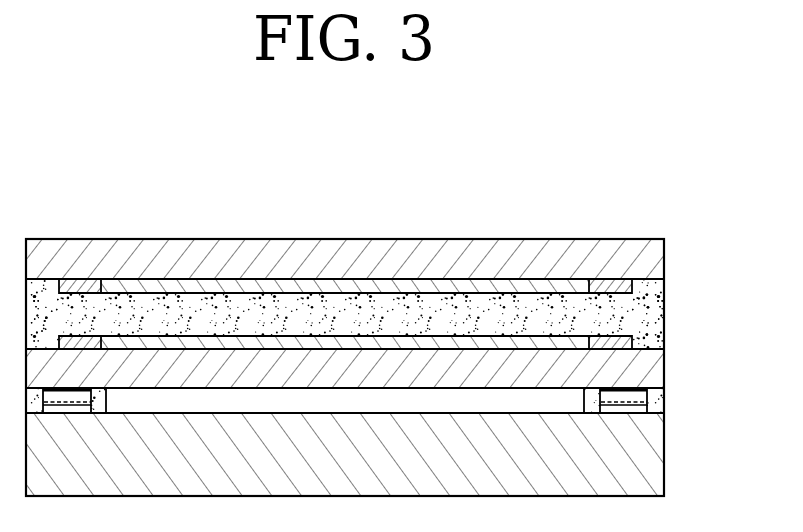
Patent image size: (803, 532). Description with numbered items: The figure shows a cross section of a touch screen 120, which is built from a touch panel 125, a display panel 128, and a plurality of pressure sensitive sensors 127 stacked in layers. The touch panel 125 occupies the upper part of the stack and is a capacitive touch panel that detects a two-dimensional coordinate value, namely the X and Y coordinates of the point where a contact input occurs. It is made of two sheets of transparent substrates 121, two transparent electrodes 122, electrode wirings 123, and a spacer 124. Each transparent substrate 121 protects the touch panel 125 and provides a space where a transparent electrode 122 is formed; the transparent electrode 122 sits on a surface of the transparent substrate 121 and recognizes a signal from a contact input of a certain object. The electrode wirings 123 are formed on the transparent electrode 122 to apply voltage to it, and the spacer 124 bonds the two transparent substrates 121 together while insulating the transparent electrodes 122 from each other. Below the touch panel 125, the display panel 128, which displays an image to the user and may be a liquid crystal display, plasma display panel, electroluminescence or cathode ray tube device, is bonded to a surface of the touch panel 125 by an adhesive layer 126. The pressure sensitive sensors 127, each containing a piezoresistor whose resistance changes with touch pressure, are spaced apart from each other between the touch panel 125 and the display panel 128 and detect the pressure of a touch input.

The touch screen 120 is at (383, 162).
The transparent substrate 121 is at (657, 257).
The transparent electrode 122 is at (577, 341).
The electrode wirings 123 is at (633, 283).
The spacer 124 is at (655, 342).
The touch panel 125 is at (735, 243).
The adhesive layer 126 is at (591, 396).
The pressure sensitive sensor 127 is at (656, 402).
The display panel 128 is at (651, 433).